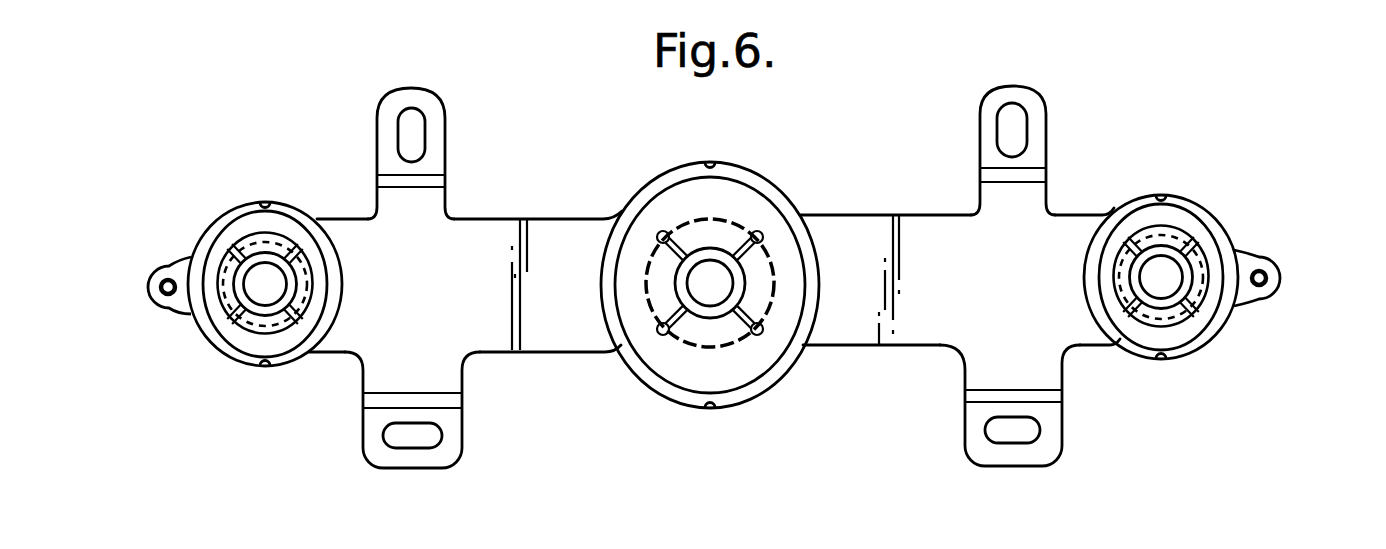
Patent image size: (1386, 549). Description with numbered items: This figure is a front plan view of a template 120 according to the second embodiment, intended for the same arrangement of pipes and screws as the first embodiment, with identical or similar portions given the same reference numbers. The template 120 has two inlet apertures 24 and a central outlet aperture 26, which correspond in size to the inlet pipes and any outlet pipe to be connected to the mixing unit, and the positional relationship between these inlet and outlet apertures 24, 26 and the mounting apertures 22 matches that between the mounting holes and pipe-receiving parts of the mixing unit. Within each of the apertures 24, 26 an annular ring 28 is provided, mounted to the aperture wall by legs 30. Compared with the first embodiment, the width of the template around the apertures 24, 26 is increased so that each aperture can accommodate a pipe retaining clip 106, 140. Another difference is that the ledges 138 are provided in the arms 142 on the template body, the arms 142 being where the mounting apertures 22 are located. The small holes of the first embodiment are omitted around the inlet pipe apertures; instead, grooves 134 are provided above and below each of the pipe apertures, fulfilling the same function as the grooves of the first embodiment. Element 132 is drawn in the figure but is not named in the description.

The mounting apertures 22 is at (407, 128).
The inlet apertures 24 is at (242, 250).
The outlet aperture 26 is at (740, 222).
The annular rings 28 is at (221, 268).
The legs 30 is at (295, 258).
The pipe retaining clip 106 is at (284, 324).
The template 120 is at (553, 307).
The locating hole tab 132 is at (158, 289).
The grooves 134 is at (263, 367).
The ledges 138 is at (432, 180).
The pipe retaining clip 140 is at (690, 220).
The arms 142 is at (437, 122).